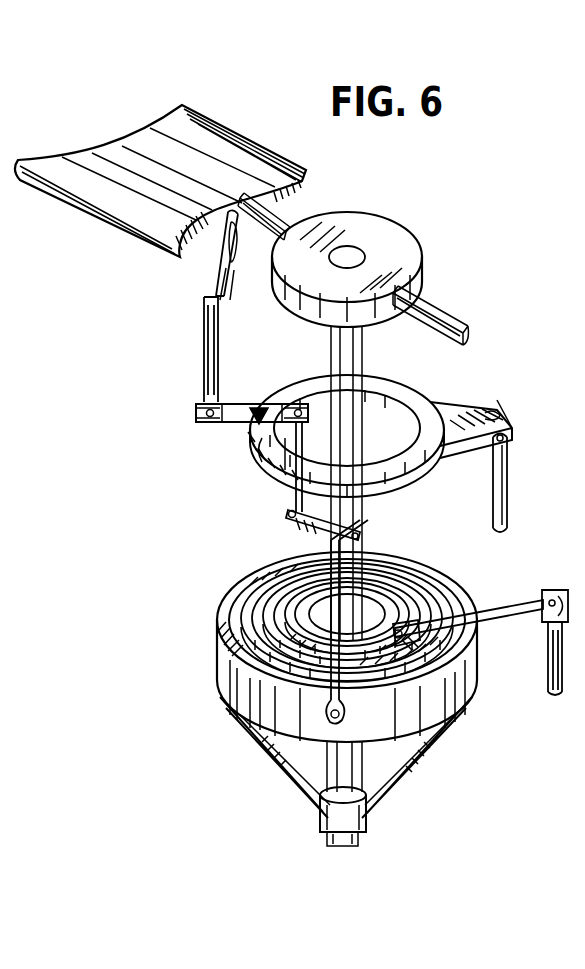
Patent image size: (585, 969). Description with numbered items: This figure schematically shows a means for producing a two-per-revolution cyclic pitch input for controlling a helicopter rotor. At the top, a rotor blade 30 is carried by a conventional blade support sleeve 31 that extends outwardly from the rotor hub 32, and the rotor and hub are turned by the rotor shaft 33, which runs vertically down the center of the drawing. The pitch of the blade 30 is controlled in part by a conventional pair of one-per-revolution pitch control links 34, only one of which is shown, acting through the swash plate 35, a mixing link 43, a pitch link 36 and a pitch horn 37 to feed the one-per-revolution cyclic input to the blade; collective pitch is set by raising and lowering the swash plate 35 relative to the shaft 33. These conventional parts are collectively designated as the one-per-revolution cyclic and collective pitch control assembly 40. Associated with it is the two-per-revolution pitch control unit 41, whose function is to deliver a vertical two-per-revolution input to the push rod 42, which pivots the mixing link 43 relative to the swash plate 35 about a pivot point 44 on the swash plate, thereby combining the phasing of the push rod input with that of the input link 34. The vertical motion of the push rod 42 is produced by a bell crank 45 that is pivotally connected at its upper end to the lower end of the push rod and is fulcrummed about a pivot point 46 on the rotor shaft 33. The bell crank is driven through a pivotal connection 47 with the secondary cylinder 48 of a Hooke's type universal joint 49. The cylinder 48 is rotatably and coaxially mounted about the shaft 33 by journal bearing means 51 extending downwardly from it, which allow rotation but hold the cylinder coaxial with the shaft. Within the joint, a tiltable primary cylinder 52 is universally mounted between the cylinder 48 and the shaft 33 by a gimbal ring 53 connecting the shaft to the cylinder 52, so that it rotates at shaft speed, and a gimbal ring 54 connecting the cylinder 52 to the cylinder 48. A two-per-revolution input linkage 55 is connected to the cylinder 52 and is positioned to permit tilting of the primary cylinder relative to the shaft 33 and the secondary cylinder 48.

The rotor blade 30 is at (181, 160).
The blade support sleeve 31 is at (275, 212).
The rotor hub 32 is at (393, 227).
The rotor shaft 33 is at (347, 351).
The one/rev. pitch control link 34 is at (507, 488).
The swash plate 35 is at (453, 403).
The pitch link 36 is at (205, 377).
The pitch horn 37 is at (212, 258).
The one/rev. cyclic and collective pitch control assembly 40 is at (503, 396).
The two/rev. pitch control unit 41 is at (466, 573).
The push rod 42 is at (276, 466).
The mixing link 43 is at (222, 424).
The pivot point 44 is at (259, 410).
The bell crank 45 is at (287, 517).
The pivot point 46 is at (340, 516).
The pivotal connection 47 is at (345, 712).
The secondary cylinder 48 is at (233, 687).
The Hooke's type universal joint 49 is at (216, 631).
The journal bearing means 51 is at (372, 812).
The tiltable cylinder 52 is at (398, 584).
The gimbal ring 53 is at (316, 596).
The gimbal ring 54 is at (428, 645).
The two/rev. input linkage 55 is at (492, 610).